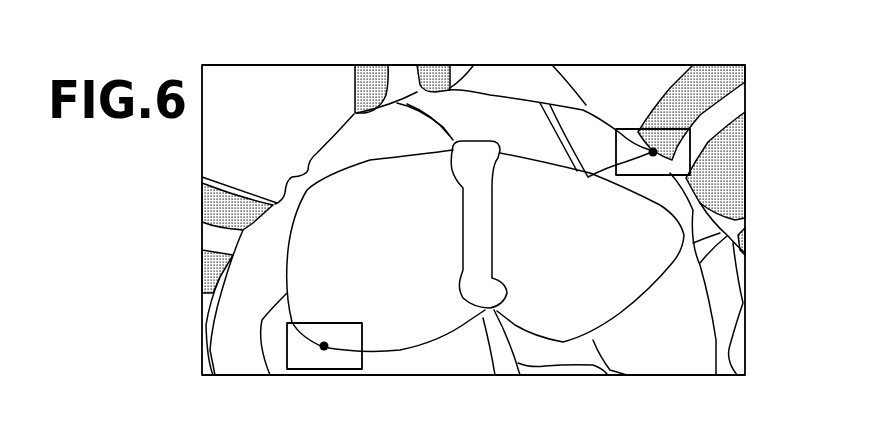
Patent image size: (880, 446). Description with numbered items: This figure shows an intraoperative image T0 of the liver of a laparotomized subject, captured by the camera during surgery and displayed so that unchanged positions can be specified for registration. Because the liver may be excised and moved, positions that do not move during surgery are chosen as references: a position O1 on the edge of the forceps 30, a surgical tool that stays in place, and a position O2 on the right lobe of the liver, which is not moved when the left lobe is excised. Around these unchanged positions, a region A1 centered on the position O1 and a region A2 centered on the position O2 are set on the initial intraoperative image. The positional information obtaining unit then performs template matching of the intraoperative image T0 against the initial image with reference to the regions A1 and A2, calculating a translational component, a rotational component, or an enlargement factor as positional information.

The intraoperative image T0 is at (512, 65).
The region A1 is at (630, 129).
The unchanged position on the edge of the forceps O1 is at (653, 152).
The forceps 30 is at (698, 77).
The region A2 is at (287, 342).
The unchanged position of the right lobe of the liver O2 is at (324, 346).